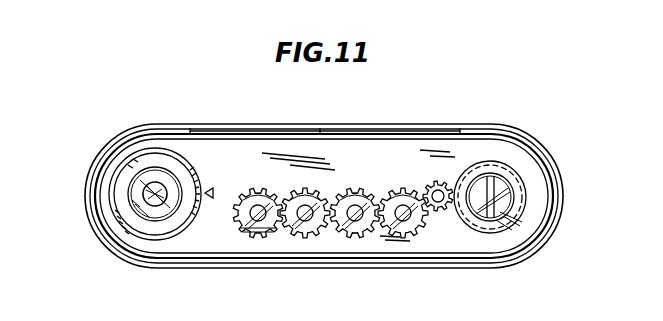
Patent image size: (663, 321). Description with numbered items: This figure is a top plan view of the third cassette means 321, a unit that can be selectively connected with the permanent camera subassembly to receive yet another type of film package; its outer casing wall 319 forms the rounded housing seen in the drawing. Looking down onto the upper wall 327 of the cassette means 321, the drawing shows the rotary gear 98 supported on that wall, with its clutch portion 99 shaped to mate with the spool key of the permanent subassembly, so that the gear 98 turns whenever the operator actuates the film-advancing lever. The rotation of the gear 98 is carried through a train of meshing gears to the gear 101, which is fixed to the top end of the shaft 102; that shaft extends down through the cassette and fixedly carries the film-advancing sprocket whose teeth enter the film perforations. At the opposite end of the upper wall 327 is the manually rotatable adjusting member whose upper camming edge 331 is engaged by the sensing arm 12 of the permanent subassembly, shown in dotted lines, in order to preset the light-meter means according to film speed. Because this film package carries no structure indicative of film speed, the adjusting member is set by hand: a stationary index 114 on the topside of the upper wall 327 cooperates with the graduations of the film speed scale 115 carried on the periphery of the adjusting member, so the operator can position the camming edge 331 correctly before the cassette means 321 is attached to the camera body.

The sensing arm 12 is at (190, 208).
The gear 98 is at (520, 214).
The clutch portion 99 is at (500, 226).
The gear 101 is at (254, 230).
The shaft 102 is at (256, 203).
The stationary index 114 is at (210, 188).
The film speed scale 115 is at (176, 154).
The housing wall 319 is at (530, 132).
The cassette means 321 is at (564, 184).
The upper wall 327 is at (313, 153).
The camming edge 331 is at (137, 167).